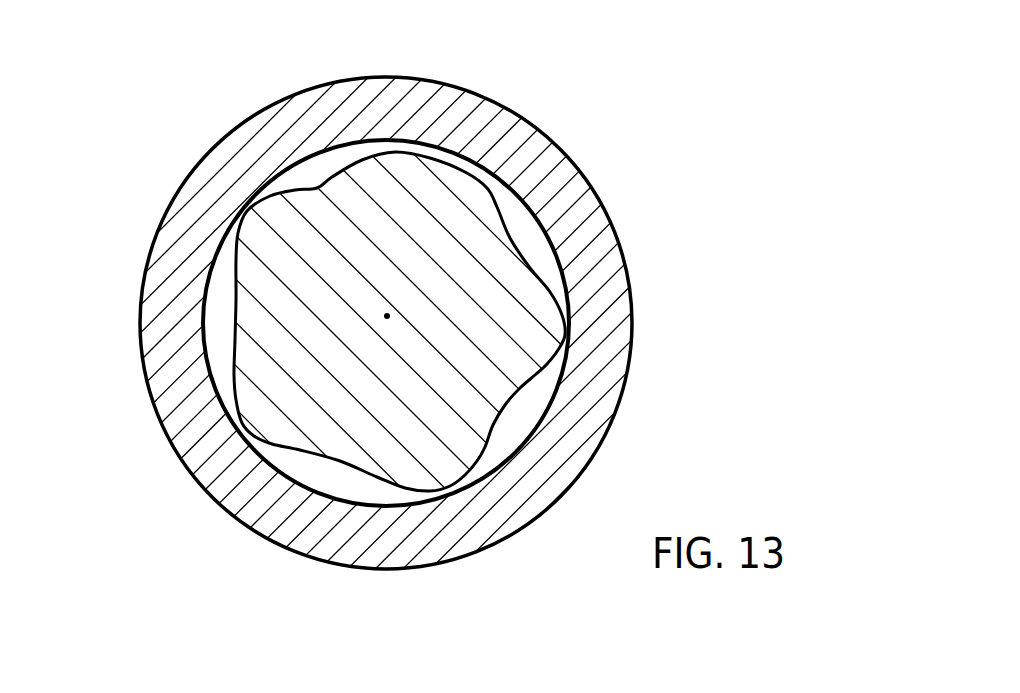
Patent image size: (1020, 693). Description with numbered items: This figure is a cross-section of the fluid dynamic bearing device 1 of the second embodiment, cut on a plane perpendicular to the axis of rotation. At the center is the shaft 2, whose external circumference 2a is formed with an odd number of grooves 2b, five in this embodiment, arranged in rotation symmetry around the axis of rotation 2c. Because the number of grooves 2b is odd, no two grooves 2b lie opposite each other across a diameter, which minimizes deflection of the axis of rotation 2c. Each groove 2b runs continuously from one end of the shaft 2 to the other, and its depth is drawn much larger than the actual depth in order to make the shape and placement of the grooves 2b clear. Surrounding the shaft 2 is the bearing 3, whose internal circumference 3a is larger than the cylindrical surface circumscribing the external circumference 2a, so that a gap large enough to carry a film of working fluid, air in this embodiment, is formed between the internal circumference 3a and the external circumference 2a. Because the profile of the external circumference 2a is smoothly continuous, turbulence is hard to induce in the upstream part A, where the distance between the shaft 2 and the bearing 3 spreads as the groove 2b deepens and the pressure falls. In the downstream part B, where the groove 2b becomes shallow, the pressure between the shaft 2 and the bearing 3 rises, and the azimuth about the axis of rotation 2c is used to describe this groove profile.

The fluid dynamic bearing device 1 is at (491, 331).
The shaft 2 is at (493, 267).
The external circumference 2a is at (547, 377).
The grooves 2b is at (317, 187).
The axis of rotation 2c is at (240, 423).
The bearing 3 is at (491, 323).
The internal circumference 3a is at (210, 300).
The upstream part A is at (380, 153).
The downstream part B is at (475, 175).